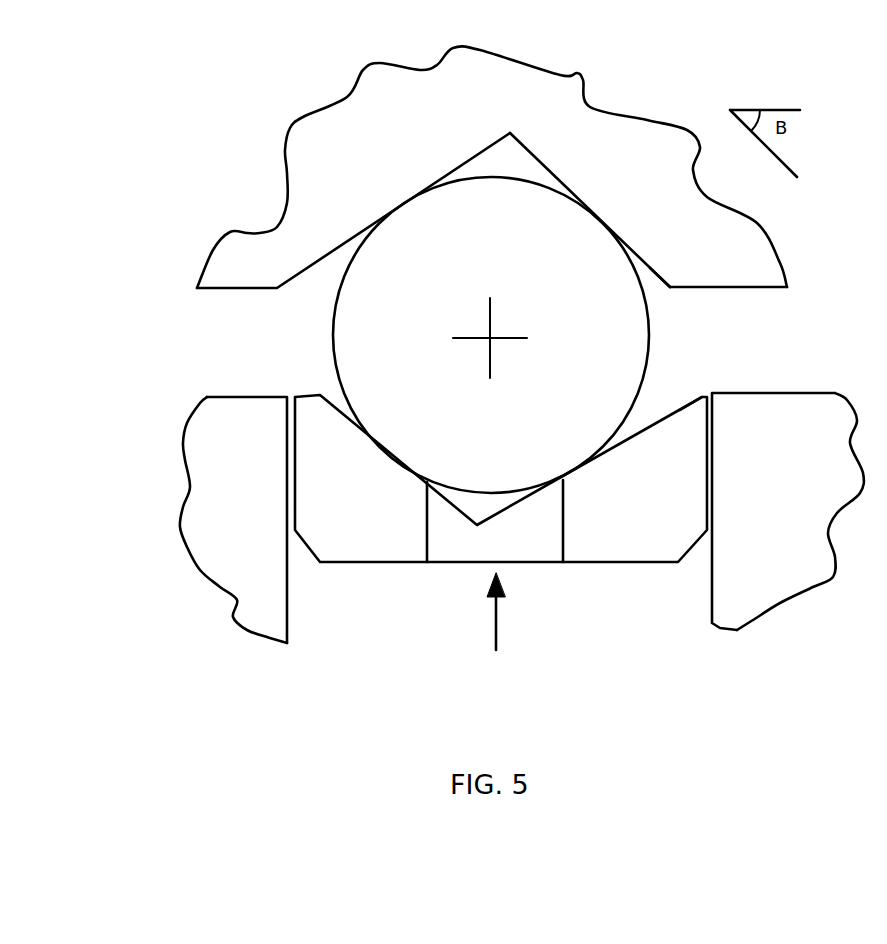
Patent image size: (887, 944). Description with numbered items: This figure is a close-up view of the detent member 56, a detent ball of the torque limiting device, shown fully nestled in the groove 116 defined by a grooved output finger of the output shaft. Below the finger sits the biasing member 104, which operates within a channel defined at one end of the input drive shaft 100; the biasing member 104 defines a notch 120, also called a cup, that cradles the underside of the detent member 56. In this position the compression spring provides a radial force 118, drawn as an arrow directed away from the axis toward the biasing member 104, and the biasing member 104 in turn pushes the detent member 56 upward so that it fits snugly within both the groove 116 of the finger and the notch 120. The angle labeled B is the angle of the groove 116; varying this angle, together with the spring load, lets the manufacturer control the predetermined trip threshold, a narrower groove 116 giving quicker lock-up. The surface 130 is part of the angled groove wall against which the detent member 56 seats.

The detent member 56 is at (491, 335).
The input drive shaft 100 is at (200, 448).
The biasing member 104 is at (307, 407).
The groove 116 is at (673, 306).
The radial force 118 is at (493, 620).
The notch 120 is at (674, 392).
The upper die angled surface 130 is at (630, 247).